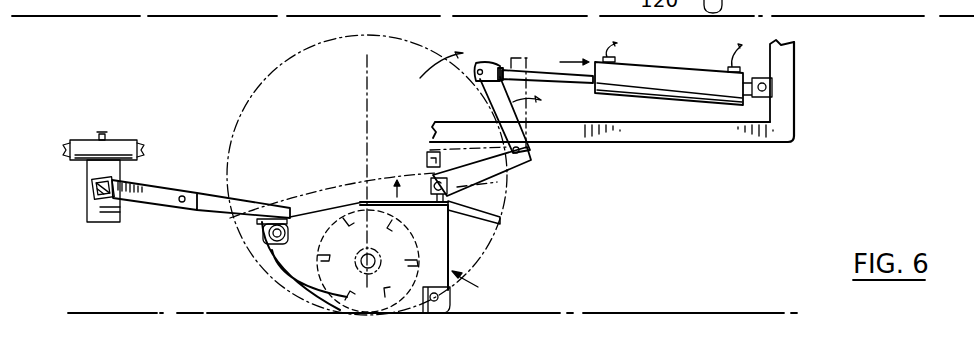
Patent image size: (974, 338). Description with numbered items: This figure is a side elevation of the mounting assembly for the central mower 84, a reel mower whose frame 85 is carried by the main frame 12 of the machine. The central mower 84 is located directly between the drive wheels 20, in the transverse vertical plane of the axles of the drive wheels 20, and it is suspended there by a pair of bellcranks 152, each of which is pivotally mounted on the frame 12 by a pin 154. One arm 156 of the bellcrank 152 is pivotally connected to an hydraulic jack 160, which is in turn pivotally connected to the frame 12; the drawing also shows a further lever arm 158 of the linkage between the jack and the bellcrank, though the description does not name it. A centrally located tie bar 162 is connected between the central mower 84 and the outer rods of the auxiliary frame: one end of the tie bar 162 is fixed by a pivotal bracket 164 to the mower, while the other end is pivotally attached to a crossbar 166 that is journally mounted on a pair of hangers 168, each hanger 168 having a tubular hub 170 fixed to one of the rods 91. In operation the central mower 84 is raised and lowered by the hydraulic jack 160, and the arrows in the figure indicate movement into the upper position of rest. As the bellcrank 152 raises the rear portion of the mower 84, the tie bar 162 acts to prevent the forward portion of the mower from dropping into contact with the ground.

The frame 12 is at (687, 137).
The drive wheels 20 is at (237, 127).
The central mower 84 is at (477, 284).
The frame 85 is at (432, 240).
The rods 91 is at (138, 146).
The bellcranks 152 is at (512, 177).
The pin 154 is at (531, 155).
The arm 156 is at (508, 181).
The lever arm 158 is at (492, 93).
The hydraulic jack 160 is at (665, 80).
The tie bar 162 is at (160, 197).
The pivotal bracket 164 is at (258, 224).
The crossbar 166 is at (93, 183).
The hangers 168 is at (107, 213).
The tubular hub 170 is at (117, 148).